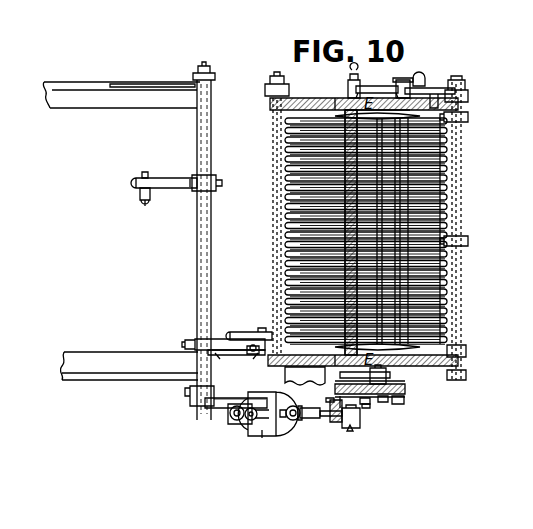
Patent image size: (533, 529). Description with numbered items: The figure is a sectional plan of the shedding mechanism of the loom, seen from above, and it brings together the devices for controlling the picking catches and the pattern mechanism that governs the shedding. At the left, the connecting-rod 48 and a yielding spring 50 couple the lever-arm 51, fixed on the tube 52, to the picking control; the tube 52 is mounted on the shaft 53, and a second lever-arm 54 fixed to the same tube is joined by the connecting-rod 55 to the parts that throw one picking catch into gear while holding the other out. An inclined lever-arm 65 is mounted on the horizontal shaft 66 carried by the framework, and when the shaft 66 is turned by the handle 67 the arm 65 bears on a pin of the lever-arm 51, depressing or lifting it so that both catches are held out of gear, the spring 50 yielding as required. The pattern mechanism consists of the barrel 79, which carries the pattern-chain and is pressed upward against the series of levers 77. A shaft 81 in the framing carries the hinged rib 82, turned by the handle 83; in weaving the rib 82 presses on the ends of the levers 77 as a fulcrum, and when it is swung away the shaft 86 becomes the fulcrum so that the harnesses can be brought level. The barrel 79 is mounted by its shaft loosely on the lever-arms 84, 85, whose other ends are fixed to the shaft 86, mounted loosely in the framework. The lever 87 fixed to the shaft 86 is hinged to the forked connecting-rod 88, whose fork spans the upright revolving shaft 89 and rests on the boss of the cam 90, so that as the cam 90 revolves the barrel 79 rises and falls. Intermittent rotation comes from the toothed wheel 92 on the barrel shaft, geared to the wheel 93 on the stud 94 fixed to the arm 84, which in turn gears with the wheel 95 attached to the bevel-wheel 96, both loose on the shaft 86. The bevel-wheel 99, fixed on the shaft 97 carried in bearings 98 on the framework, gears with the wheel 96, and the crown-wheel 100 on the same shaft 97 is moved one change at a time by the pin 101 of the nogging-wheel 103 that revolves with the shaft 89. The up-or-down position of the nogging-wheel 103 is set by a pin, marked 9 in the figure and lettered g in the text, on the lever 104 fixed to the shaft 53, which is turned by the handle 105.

The bar 9 is at (240, 389).
The connecting-rod 48 is at (255, 354).
The yielding spring 50 is at (244, 352).
The lever-arm 51 is at (200, 342).
The tube 52 is at (212, 165).
The shaft 53 is at (197, 406).
The lever-arm 54 is at (176, 177).
The connecting-rod 55 is at (148, 199).
The inclined lever-arm 65 is at (249, 328).
The horizontal shaft 66 is at (271, 227).
The handle 67 is at (280, 79).
The levers 77 is at (454, 208).
The barrel 79 is at (380, 86).
The shaft 81 is at (461, 319).
The rib 82 is at (466, 120).
The handle 83 is at (465, 90).
The lever-arm 84 is at (398, 381).
The lever-arm 85 is at (364, 90).
The shaft 86 is at (353, 76).
The lever 87 is at (354, 425).
The forked connecting-rod 88 is at (304, 418).
The upright revolving shaft 89 is at (237, 424).
The cam 90 is at (279, 431).
The toothed wheel 92 is at (400, 398).
The wheel 93 is at (385, 398).
The stud 94 is at (368, 407).
The wheel 95 is at (337, 390).
The bevel-wheel 96 is at (365, 402).
The shaft 97 is at (302, 404).
The bearings 98 is at (305, 376).
The bevel-wheel 99 is at (336, 423).
The crown-wheel 100 is at (262, 435).
The pin 101 is at (236, 420).
The nogging-wheel 103 is at (251, 421).
The lever 104 is at (228, 396).
The handle 105 is at (211, 74).